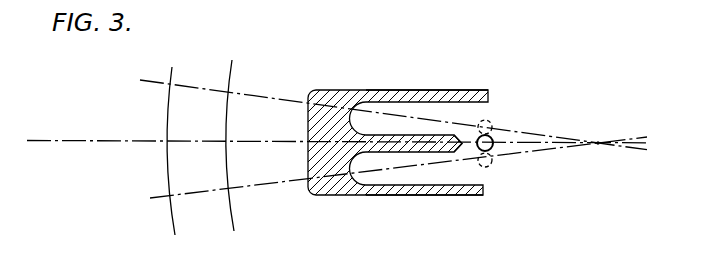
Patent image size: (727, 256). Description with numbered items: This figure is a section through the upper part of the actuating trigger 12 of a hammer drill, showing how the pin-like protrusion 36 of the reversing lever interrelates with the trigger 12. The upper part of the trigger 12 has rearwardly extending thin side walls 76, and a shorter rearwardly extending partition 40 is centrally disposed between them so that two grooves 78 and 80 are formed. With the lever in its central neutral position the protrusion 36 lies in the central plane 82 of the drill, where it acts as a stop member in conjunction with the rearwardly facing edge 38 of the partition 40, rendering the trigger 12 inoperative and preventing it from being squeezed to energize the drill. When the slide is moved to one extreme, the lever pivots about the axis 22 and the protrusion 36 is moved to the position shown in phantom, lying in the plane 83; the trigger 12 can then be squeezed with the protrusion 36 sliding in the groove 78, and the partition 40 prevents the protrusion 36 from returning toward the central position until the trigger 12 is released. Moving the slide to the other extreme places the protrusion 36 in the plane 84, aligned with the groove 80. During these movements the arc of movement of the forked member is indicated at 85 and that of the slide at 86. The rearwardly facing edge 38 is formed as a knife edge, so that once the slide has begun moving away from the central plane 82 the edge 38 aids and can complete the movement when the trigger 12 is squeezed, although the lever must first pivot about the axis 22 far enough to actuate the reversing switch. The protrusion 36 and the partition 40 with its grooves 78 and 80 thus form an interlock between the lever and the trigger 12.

The actuating trigger 12 is at (325, 89).
The pivotal axis 22 is at (598, 143).
The pin-like protrusion 36 is at (493, 148).
The rearwardly facing edge 38 is at (462, 146).
The partition 40 is at (400, 151).
The side walls 76 is at (423, 93).
The groove 78 is at (461, 97).
The groove 80 is at (436, 178).
The central plane 82 is at (87, 138).
The plane 83 is at (256, 94).
The plane 84 is at (291, 184).
The arc of movement of the forked member 85 is at (231, 66).
The arc of movement of the slide 86 is at (170, 70).